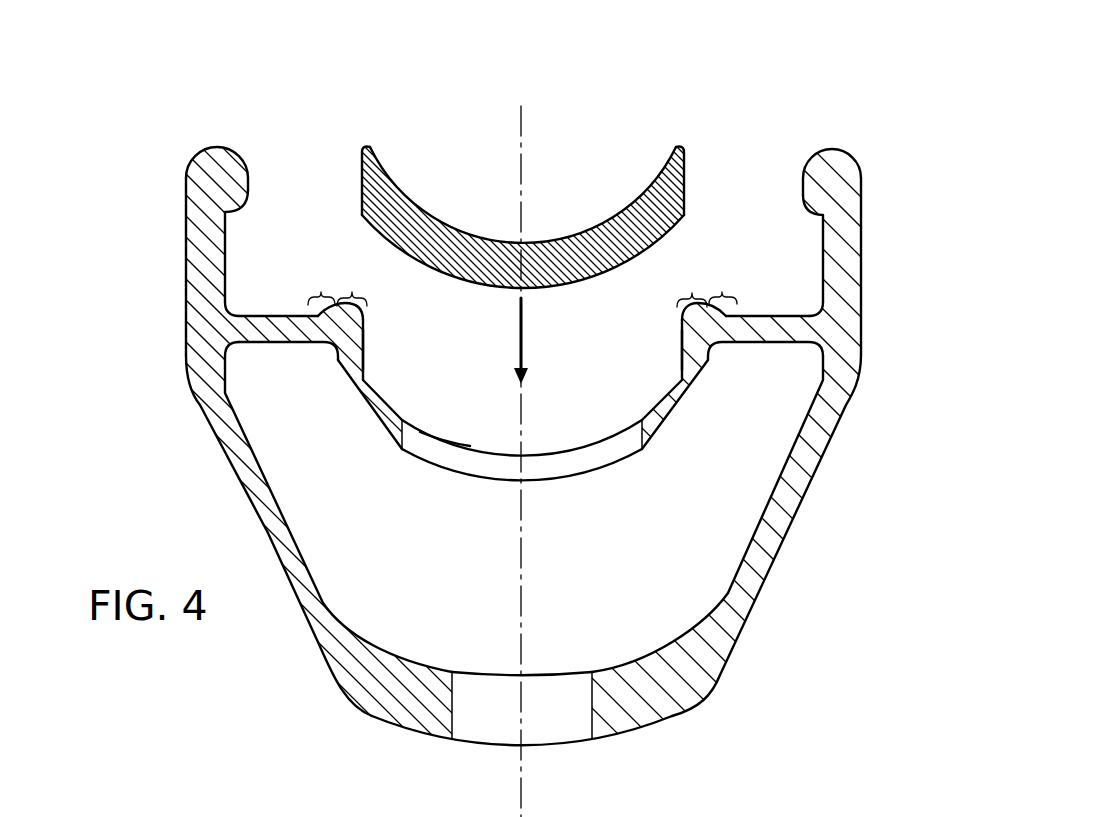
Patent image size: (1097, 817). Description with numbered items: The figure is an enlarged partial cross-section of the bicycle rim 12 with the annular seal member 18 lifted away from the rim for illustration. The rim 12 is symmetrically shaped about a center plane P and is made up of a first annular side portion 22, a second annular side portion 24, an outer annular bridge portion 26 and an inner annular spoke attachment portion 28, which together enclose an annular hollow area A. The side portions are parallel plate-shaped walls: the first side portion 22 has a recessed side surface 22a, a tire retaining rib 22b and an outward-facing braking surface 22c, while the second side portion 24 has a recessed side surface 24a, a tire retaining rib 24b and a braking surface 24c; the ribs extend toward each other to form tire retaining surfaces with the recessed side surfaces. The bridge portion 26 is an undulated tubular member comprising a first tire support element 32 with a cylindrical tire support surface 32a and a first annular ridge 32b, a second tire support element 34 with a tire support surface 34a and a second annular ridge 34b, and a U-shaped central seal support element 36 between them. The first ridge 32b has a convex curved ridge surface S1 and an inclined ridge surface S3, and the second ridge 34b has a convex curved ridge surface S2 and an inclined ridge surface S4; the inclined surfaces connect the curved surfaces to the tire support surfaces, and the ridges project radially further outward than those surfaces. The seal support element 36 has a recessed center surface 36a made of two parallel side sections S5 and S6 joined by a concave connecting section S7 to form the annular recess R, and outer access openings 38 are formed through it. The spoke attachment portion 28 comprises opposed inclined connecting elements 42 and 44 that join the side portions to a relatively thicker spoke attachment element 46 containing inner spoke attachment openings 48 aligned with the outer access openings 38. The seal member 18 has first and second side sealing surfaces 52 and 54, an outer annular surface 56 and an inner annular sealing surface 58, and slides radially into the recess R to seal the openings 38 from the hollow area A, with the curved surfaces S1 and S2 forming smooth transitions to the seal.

The bicycle rim 12 is at (548, 408).
The annular seal member 18 is at (517, 173).
The first annular side portion 22 is at (821, 204).
The first annular recessed side surface 22a is at (823, 232).
The first annular tire retaining rib 22b is at (812, 172).
The first annular braking surface 22c is at (864, 218).
The second annular side portion 24 is at (226, 199).
The second annular recessed side surface 24a is at (230, 234).
The second annular tire retaining rib 24b is at (243, 172).
The second annular braking surface 24c is at (186, 220).
The outer annular bridge portion 26 is at (580, 469).
The inner annular spoke attachment portion 28 is at (597, 735).
The first annular tire support element 32 is at (714, 342).
The first annular tire support surface 32a is at (780, 316).
The first annular ridge 32b is at (688, 326).
The second annular tire support element 34 is at (349, 329).
The second annular tire support surface 34a is at (276, 316).
The second annular ridge 34b is at (362, 320).
The annular central seal support element 36 is at (417, 411).
The annular recessed center surface 36a is at (394, 392).
The outer access openings 38 is at (643, 440).
The first annular inclined connecting element 42 is at (772, 534).
The second annular inclined connecting element 44 is at (283, 541).
The spoke attachment element 46 is at (658, 713).
The inner spoke attachment openings 48 is at (567, 713).
The first annular side sealing surface 52 is at (688, 186).
The second annular side sealing surface 54 is at (361, 186).
The outer annular surface 56 is at (462, 230).
The inner annular sealing surface 58 is at (660, 252).
The first convex curved ridge surface S1 is at (693, 280).
The second convex curved ridge surface S2 is at (360, 282).
The first inclined ridge surface S3 is at (736, 288).
The second inclined ridge surface S4 is at (317, 282).
The first annular side section S5 is at (681, 350).
The second annular side section S6 is at (364, 352).
The concave connecting section S7 is at (445, 440).
The annular recess R is at (575, 398).
The center plane P is at (528, 576).
The annular hollow area A is at (684, 592).